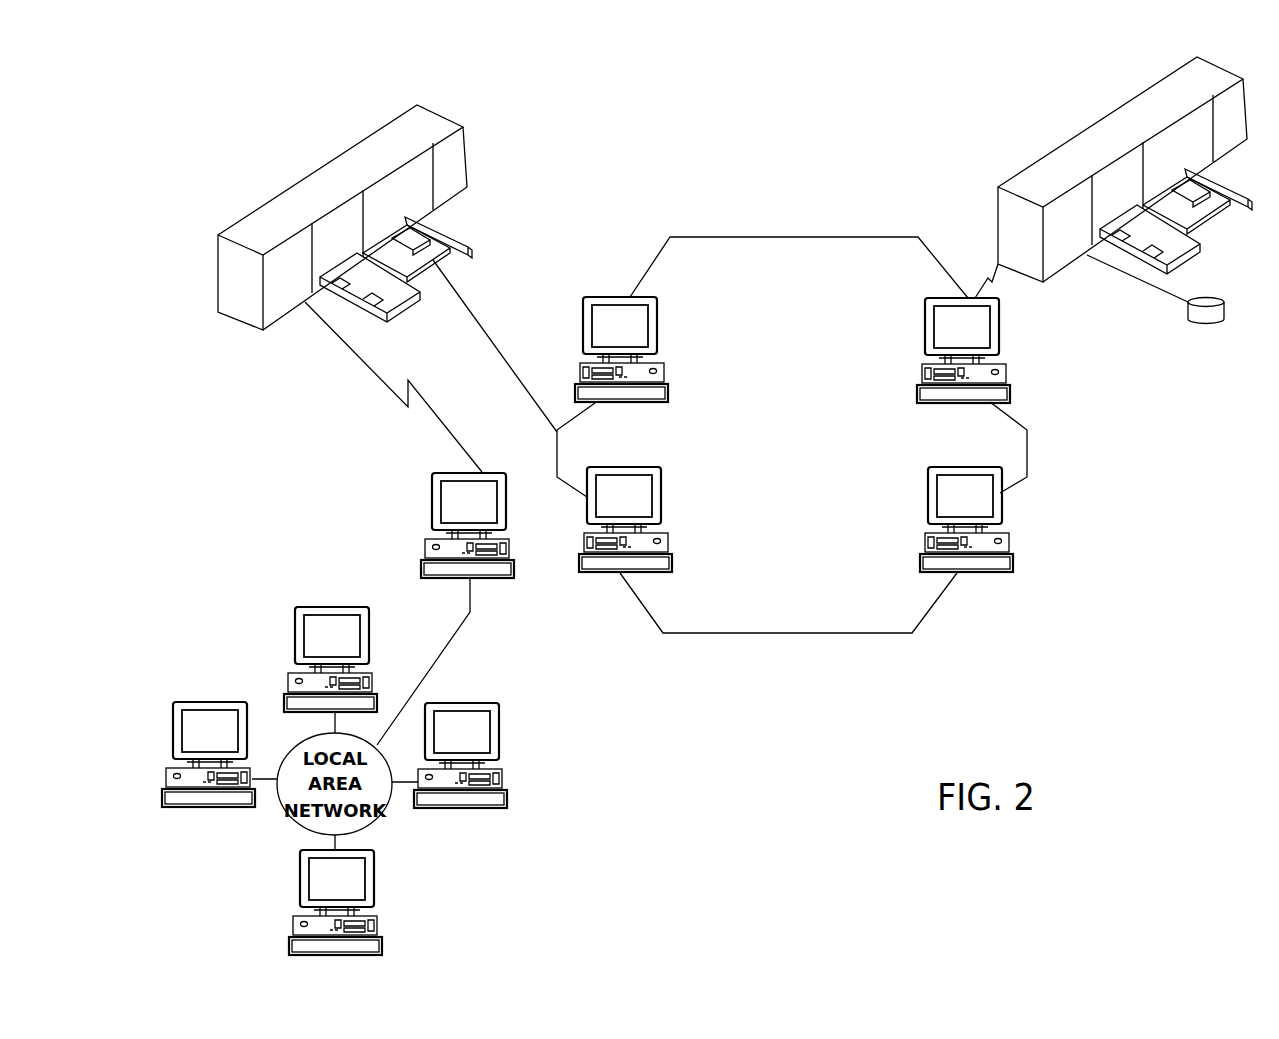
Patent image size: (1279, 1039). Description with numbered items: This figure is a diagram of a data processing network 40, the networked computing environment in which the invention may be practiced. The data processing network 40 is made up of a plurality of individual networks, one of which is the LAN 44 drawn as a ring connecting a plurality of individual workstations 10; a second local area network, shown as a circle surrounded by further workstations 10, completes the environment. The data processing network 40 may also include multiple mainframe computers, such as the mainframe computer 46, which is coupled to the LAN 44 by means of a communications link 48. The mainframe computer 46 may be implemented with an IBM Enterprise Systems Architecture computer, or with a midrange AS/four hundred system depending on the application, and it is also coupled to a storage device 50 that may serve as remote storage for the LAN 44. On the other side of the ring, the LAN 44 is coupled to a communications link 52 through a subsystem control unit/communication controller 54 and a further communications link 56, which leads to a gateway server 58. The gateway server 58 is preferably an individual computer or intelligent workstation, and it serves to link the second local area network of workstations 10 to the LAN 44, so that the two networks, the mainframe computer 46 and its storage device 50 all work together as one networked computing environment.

The workstation 10 is at (603, 297).
The data processing network 40 is at (857, 228).
The LAN 44 is at (792, 435).
The mainframe computer 46 is at (1082, 132).
The communications link 48 is at (988, 278).
The storage device 50 is at (1200, 325).
The communications link 52 is at (480, 322).
The subsystem control unit/communication controller 54 is at (280, 195).
The communications link 56 is at (340, 345).
The gateway server 58 is at (432, 475).